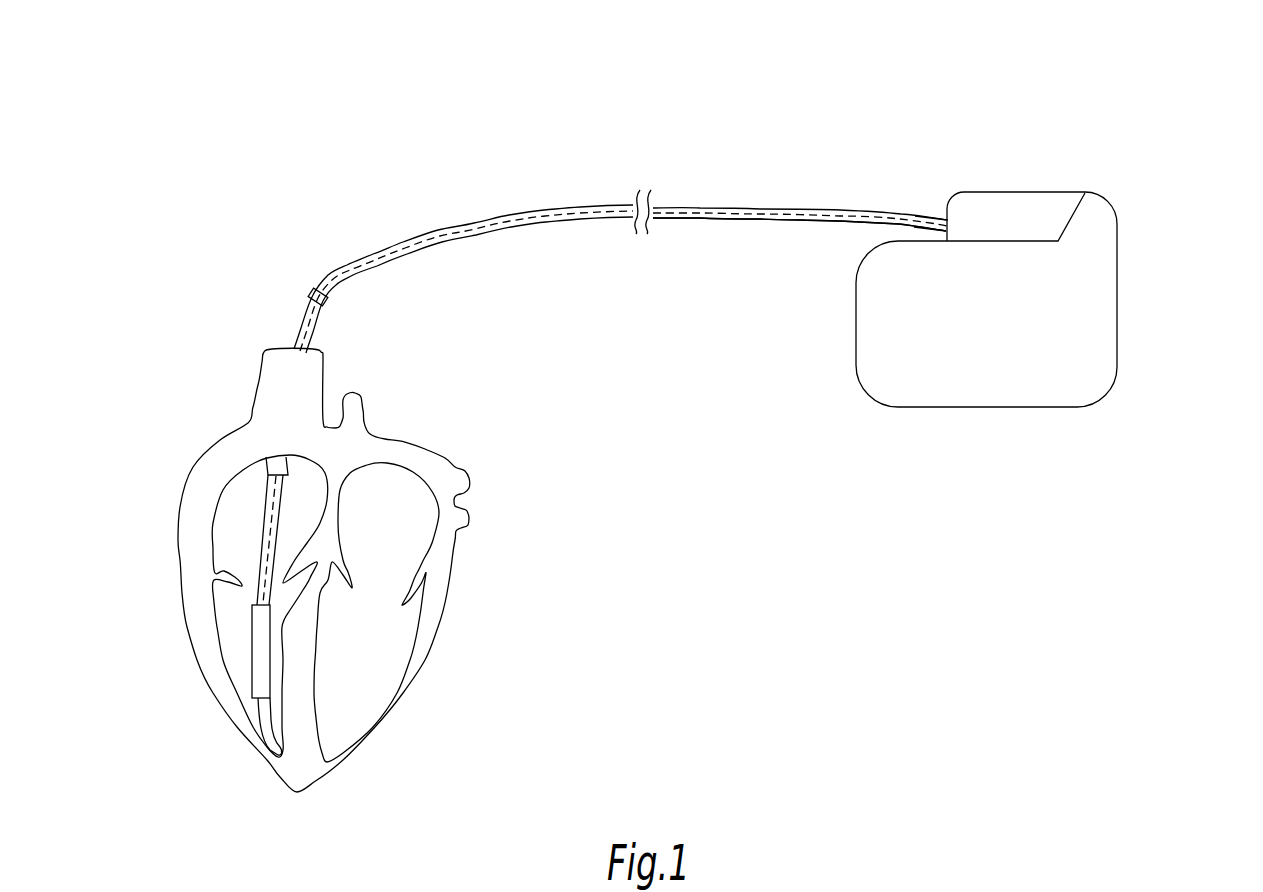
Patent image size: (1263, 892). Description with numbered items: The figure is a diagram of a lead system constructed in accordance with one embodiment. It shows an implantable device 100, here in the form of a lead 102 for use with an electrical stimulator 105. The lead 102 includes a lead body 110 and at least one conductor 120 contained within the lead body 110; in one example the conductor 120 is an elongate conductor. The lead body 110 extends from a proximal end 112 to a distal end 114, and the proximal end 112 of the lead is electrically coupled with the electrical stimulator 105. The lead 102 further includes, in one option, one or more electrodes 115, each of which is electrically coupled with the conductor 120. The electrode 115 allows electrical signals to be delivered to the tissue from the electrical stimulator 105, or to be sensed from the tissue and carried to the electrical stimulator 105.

The implantable device 100 is at (1162, 115).
The lead 102 is at (695, 205).
The electrical stimulator 105 is at (1118, 268).
The lead body 110 is at (372, 257).
The proximal end 112 is at (915, 212).
The distal end 114 is at (265, 730).
The electrode 115 is at (263, 647).
The conductor 120 is at (810, 221).